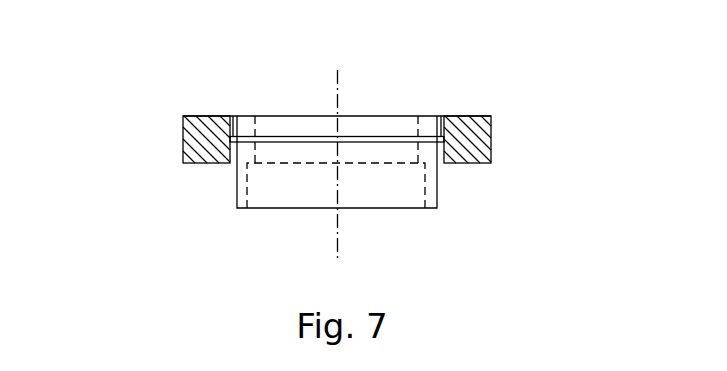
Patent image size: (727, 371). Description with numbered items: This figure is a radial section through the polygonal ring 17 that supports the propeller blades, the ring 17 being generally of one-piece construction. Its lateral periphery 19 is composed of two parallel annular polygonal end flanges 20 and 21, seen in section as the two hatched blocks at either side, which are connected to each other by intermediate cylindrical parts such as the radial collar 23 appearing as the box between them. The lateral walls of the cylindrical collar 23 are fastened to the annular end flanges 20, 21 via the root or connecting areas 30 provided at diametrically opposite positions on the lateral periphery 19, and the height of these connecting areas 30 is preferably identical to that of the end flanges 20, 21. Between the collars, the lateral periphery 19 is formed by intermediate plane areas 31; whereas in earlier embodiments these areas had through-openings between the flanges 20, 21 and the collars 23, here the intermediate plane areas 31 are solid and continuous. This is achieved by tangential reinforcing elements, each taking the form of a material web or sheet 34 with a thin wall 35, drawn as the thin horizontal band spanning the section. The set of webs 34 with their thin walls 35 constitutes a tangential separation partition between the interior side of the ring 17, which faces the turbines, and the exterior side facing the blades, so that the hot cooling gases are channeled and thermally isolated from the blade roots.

The polygonal ring 17 is at (508, 177).
The lateral periphery 19 is at (448, 95).
The annular polygonal end flange 20 is at (185, 133).
The annular polygonal end flange 21 is at (484, 132).
The radial collar 23 is at (236, 194).
The connecting area 30 is at (232, 116).
The intermediate plane area 31 is at (383, 95).
The material web 34 is at (297, 108).
The thin wall 35 is at (298, 143).